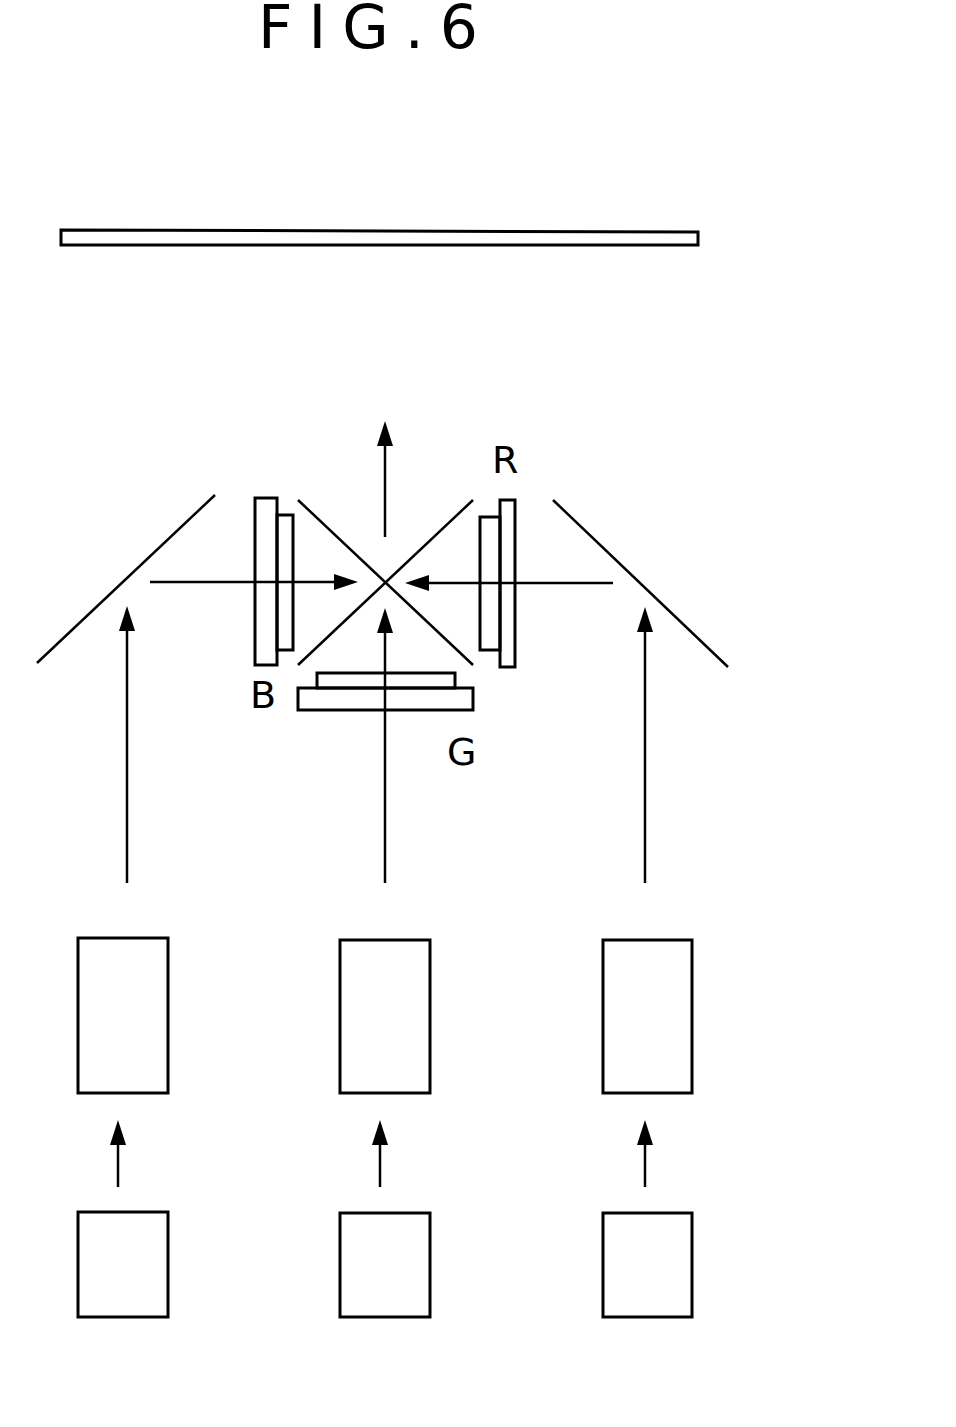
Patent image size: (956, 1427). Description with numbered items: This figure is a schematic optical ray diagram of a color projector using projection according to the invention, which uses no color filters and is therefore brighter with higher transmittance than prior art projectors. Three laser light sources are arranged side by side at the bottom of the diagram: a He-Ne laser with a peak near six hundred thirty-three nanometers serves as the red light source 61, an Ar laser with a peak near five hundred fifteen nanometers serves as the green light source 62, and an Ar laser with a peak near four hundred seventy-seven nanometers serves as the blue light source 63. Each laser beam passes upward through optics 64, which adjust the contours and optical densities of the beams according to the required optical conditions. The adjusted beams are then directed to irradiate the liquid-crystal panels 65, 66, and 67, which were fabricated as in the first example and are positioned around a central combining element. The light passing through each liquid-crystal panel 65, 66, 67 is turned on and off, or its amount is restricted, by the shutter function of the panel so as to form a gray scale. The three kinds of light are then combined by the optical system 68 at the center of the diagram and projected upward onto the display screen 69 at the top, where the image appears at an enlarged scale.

The red light source 61 is at (692, 1262).
The green light source 62 is at (430, 1262).
The blue light source 63 is at (168, 1260).
The optics 64 is at (168, 1038).
The liquid-crystal panel 65 is at (513, 498).
The liquid-crystal panel 66 is at (473, 692).
The liquid-crystal panel 67 is at (255, 498).
The optical system 68 is at (418, 513).
The display screen 69 is at (585, 230).